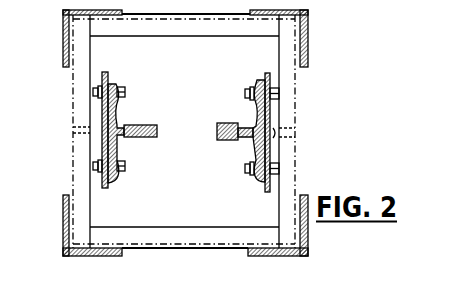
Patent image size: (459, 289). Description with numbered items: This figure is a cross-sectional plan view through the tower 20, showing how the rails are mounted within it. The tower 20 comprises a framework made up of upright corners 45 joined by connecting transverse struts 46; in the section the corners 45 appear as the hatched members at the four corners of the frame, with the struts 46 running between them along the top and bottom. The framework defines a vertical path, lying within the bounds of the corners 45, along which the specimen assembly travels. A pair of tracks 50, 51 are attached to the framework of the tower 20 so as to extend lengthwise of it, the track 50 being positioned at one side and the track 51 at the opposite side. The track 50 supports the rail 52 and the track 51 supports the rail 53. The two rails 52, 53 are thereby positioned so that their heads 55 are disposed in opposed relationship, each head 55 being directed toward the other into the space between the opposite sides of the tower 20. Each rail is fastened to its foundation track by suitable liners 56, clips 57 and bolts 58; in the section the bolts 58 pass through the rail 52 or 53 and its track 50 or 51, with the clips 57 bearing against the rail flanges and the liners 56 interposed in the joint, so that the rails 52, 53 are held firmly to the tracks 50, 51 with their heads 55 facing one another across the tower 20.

The tower 20 is at (67, 91).
The upright corners 45 is at (309, 42).
The transverse struts 46 is at (200, 238).
The track 50 is at (97, 138).
The track 51 is at (272, 138).
The rail 52 is at (98, 142).
The rail 53 is at (256, 122).
The heads 55 is at (217, 131).
The liners 56 is at (109, 87).
The clips 57 is at (118, 101).
The bolts 58 is at (121, 171).